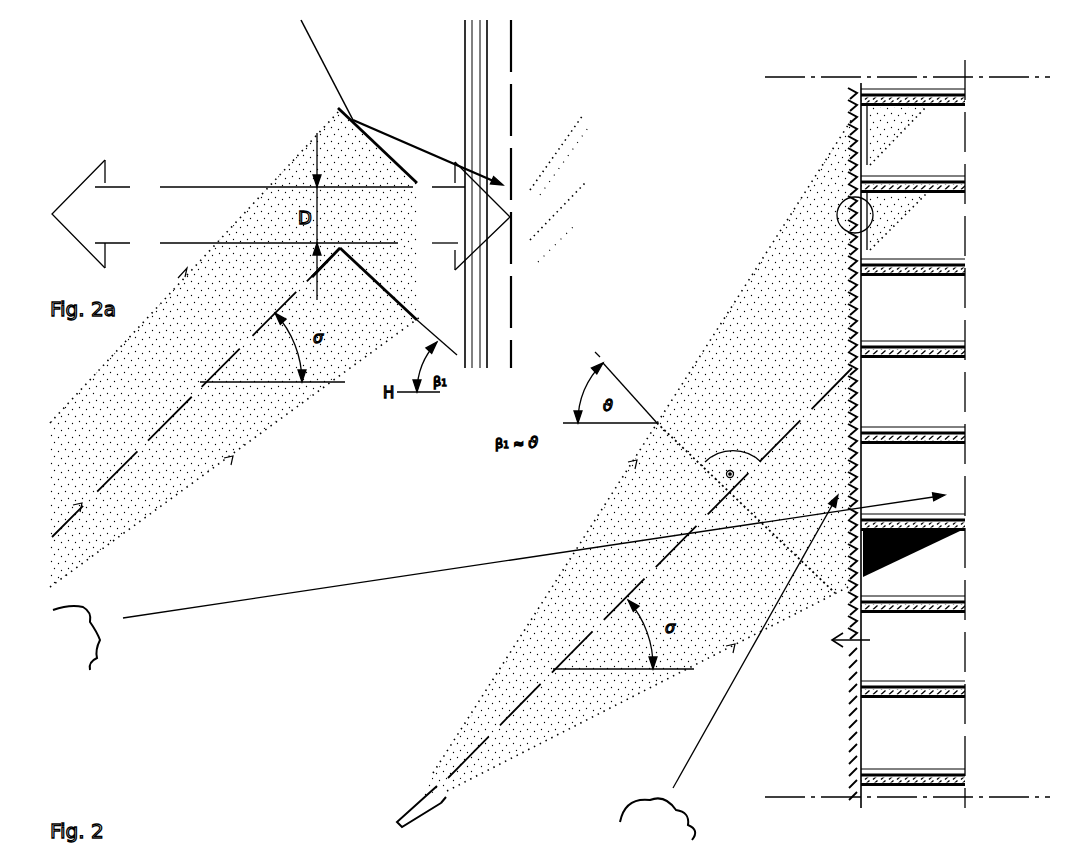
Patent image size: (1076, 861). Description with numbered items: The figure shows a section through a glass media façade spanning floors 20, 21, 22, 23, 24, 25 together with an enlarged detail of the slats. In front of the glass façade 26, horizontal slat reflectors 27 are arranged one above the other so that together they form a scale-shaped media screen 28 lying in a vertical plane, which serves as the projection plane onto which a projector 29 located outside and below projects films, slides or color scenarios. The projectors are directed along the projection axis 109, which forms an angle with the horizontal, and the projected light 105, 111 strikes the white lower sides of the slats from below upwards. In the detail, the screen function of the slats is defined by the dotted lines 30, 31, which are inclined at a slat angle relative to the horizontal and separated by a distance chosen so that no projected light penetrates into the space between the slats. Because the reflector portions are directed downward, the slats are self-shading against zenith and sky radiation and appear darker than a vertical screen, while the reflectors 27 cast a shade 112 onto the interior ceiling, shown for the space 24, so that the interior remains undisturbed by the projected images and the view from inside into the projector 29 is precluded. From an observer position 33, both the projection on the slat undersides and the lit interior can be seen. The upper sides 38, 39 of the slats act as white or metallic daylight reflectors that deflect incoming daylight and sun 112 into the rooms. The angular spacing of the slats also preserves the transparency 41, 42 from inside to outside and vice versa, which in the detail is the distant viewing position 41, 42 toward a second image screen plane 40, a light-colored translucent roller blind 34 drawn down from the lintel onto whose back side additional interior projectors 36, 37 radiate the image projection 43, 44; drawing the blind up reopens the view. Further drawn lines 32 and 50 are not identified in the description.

In FIG. 2, the floor 20 is at (960, 225).
In FIG. 2, the floor 21 is at (960, 308).
In FIG. 2, the floor 22 is at (960, 395).
In FIG. 2, the floor 23 is at (960, 480).
In FIG. 2, the floor (interior space) 24 is at (960, 580).
In FIG. 2, the floor 25 is at (960, 648).
In FIG. 2A, the glass façade 26 is at (475, 79).
In FIG. 2, the slat reflectors 27 is at (849, 67).
In FIG. 2, the scale-shaped media screen (projection plane) 28 is at (742, 500).
In FIG. 2, the projector 29 is at (413, 826).
In FIG. 2A, the slat reflector lower side (dotted line) 30 is at (372, 293).
In FIG. 2A, the slat reflector lower side (dotted line) 31 is at (373, 162).
In FIG. 2, the beam path 32 is at (688, 816).
In FIG. 2, the observer position 33 is at (108, 644).
In FIG. 2, the second image screen plane (roller blind) 34 is at (868, 127).
In FIG. 2, the additional projector 36 is at (924, 194).
In FIG. 2, the additional projector 37 is at (924, 108).
In FIG. 2A, the slat reflector upper side 38 is at (383, 290).
In FIG. 2A, the slat reflector upper side 39 is at (373, 130).
In FIG. 2A, the second image screen plane 40 is at (513, 324).
In FIG. 2A, the transparency / viewing position 41 is at (180, 181).
In FIG. 2A, the transparency / viewing position 42 is at (180, 238).
In FIG. 2A, the image projection 43 is at (575, 142).
In FIG. 2A, the image projection 44 is at (575, 195).
In FIG. 2, the direction arrow 50 is at (865, 648).
In FIG. 2, the projected light 105 is at (557, 718).
In FIG. 2A, the projection axis 109 is at (130, 457).
In FIG. 2, the projection axis 109 is at (599, 637).
In FIG. 2A, the projected light 111 is at (180, 297).
In FIG. 2A, the shade (sun) 112 is at (326, 77).
In FIG. 2, the shade (sun) 112 is at (927, 548).